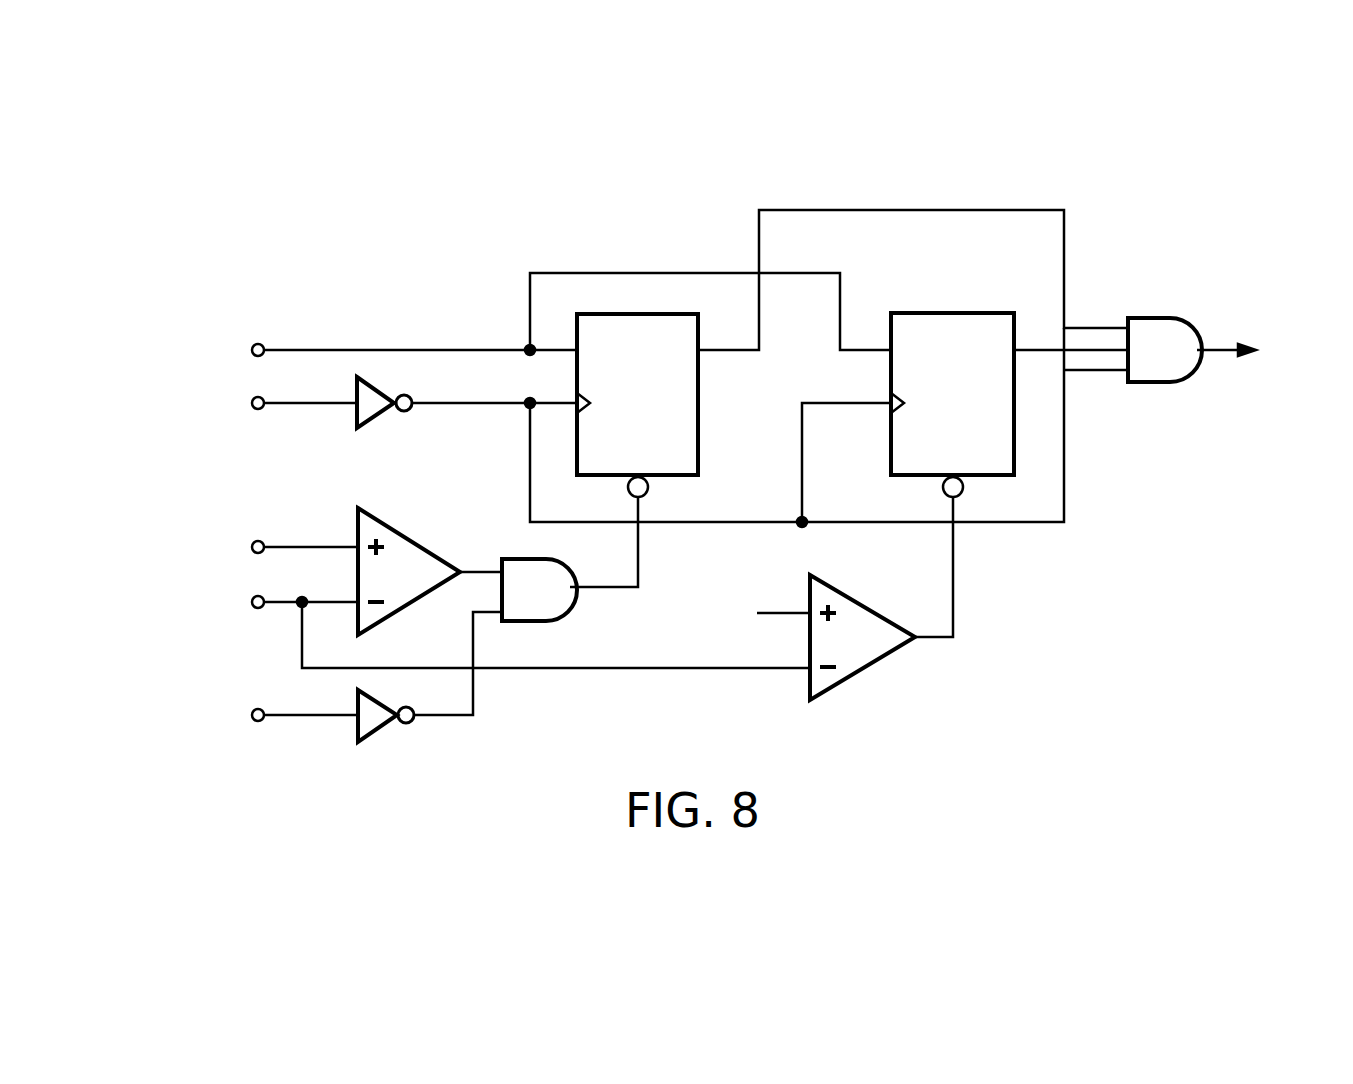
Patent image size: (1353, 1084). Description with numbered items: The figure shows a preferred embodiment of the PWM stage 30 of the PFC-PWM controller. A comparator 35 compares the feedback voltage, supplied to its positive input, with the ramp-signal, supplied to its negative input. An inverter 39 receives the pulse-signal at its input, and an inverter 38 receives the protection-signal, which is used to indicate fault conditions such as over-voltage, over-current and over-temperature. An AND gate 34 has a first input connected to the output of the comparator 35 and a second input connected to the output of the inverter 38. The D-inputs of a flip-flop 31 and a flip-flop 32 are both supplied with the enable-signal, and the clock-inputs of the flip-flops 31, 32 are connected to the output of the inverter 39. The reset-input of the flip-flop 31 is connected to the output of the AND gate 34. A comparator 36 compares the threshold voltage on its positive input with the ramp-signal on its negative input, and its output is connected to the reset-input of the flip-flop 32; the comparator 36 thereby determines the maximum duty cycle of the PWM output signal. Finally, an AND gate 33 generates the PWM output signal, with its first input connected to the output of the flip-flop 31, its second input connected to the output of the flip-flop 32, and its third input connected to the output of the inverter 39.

The PWM stage 30 is at (1198, 148).
The flip-flop 31 is at (700, 425).
The flip-flop 32 is at (965, 308).
The AND gate 33 is at (1152, 308).
The AND gate 34 is at (577, 612).
The comparator 35 is at (410, 525).
The comparator 36 is at (870, 678).
The inverter 38 is at (375, 742).
The inverter 39 is at (355, 430).